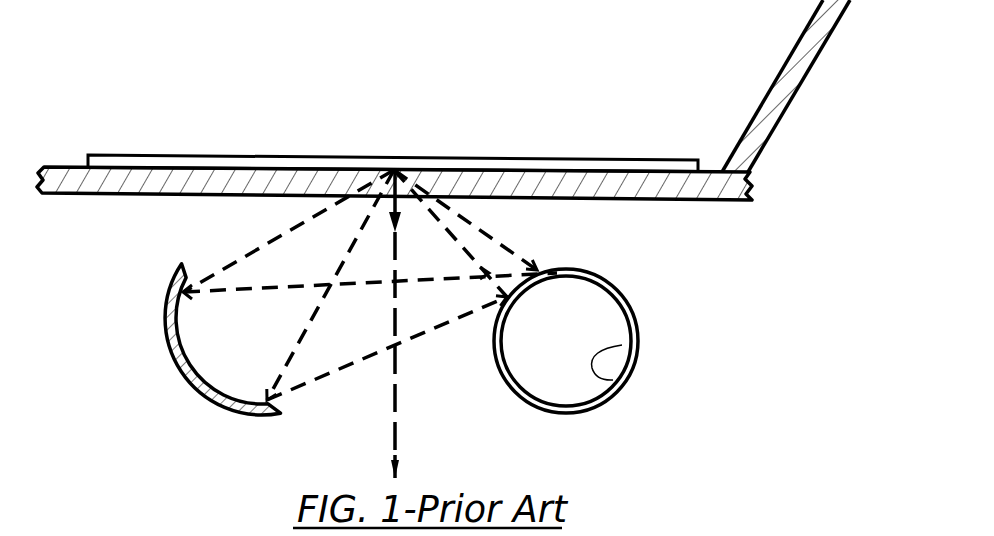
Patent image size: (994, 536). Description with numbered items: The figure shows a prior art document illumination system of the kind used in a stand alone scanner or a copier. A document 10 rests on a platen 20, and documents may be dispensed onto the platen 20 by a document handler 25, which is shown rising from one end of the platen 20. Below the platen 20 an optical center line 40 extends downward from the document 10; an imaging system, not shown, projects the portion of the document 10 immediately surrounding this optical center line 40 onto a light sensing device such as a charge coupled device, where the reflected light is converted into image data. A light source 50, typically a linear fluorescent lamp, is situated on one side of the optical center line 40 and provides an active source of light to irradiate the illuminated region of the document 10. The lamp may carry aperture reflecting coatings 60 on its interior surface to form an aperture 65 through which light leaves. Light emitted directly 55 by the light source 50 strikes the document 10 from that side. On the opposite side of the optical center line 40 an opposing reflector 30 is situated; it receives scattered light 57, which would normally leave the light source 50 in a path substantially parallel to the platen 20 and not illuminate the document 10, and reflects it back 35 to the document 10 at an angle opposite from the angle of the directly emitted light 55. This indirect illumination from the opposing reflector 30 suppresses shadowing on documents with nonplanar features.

The document 10 is at (609, 166).
The platen 20 is at (747, 186).
The document handler 25 is at (785, 108).
The opposing reflector 30 is at (170, 337).
The reflected light back to the document 35 is at (339, 270).
The optical center line 40 is at (396, 432).
The light source 50 is at (627, 302).
The directly emitted light 55 is at (474, 258).
The scattered light 57 is at (367, 358).
The aperture reflecting coatings 60 is at (622, 345).
The aperture 65 is at (538, 265).